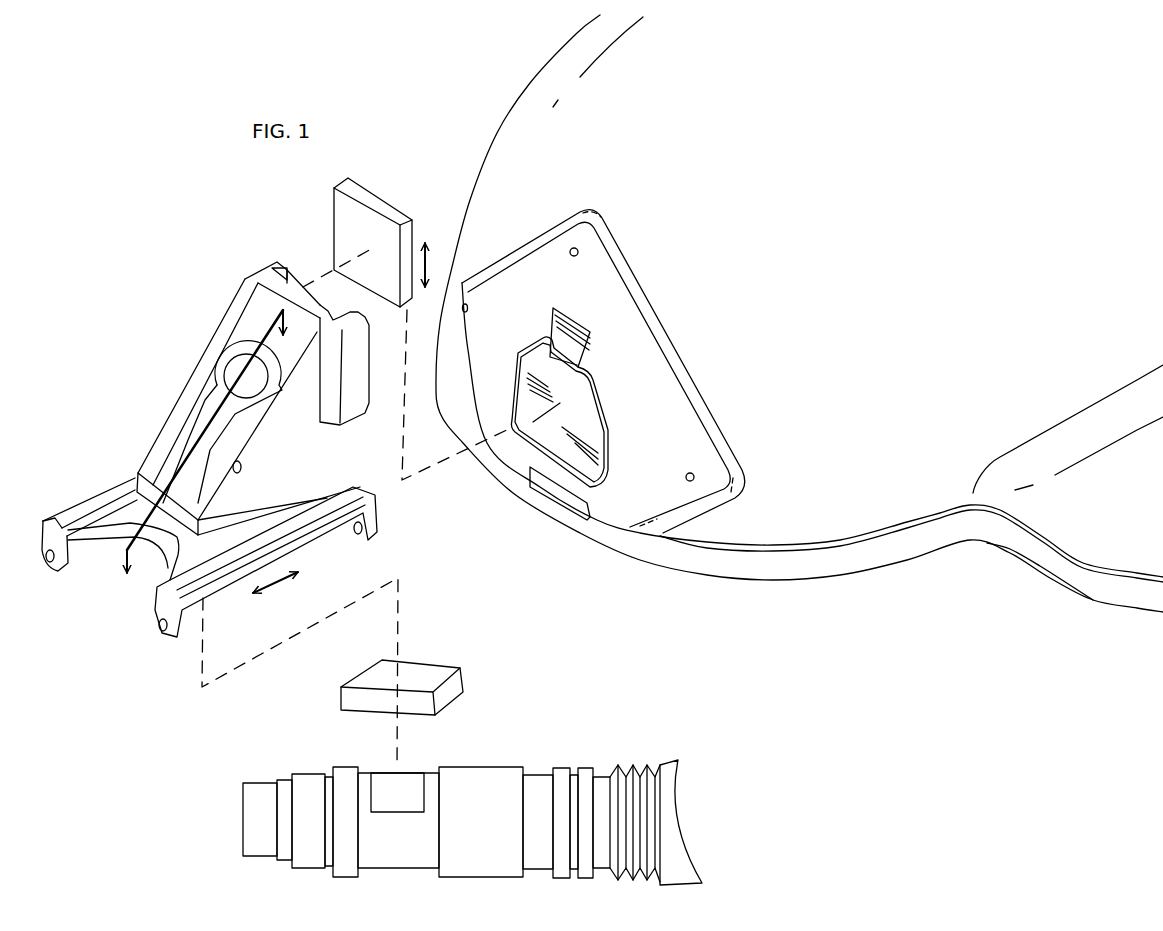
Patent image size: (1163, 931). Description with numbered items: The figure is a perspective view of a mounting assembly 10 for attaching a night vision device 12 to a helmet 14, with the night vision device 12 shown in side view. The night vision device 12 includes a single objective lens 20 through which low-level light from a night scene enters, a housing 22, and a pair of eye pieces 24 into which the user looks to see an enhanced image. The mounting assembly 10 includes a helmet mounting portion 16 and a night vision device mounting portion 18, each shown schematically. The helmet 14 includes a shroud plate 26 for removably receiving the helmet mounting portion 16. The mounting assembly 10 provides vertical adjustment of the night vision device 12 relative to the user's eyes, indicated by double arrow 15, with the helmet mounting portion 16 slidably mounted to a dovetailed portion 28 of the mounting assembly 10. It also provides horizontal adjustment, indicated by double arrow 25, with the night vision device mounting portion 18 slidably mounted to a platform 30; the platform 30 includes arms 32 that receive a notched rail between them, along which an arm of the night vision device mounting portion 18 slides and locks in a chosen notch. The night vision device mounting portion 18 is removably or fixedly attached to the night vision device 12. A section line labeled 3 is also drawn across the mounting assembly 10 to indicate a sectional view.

The mounting assembly 10 is at (176, 327).
The night vision device 12 is at (498, 807).
The helmet 14 is at (803, 582).
The double arrow 15 is at (440, 265).
The helmet mounting portion 16 is at (375, 193).
The night vision device mounting portion 18 is at (440, 660).
The objective lens 20 is at (267, 782).
The housing 22 is at (490, 826).
The eye pieces 24 is at (692, 877).
The double arrow 25 is at (276, 589).
The shroud plate 26 is at (677, 397).
The dovetailed portion 28 is at (345, 317).
The platform 30 is at (323, 533).
The arms 32 is at (377, 530).
The section line 3 is at (205, 454).